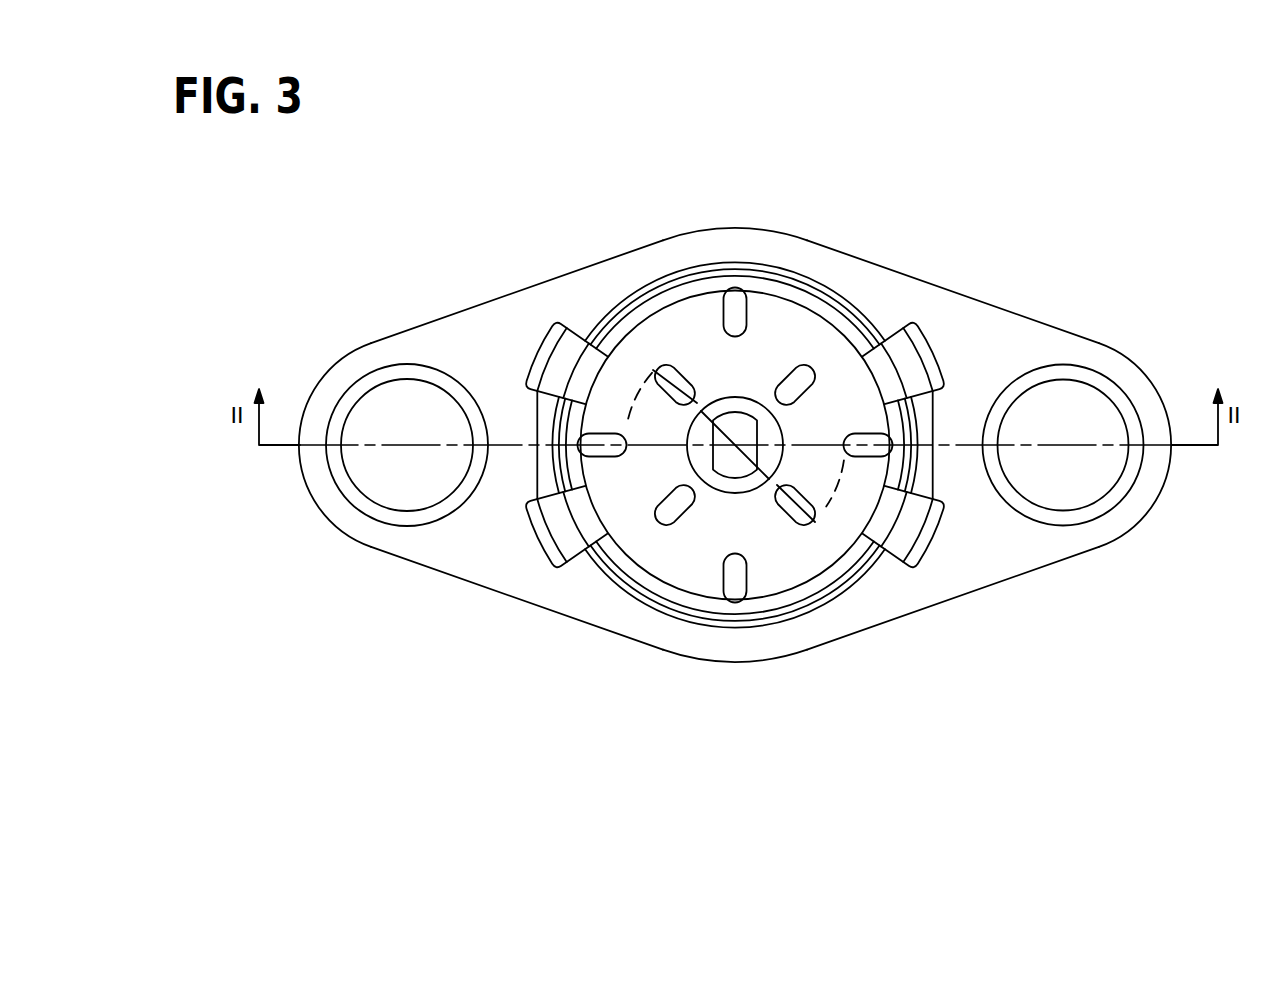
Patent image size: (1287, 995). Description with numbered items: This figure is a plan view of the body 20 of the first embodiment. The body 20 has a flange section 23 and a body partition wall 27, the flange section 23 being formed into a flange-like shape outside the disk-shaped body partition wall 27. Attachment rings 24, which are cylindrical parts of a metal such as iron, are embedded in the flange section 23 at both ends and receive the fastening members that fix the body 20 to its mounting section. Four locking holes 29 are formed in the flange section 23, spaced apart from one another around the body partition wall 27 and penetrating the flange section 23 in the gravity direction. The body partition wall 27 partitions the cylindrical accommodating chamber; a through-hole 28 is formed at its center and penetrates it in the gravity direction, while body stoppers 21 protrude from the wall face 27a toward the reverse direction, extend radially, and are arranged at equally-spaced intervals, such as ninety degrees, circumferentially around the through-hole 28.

The body 20 is at (1003, 287).
The body stoppers 21 is at (788, 515).
The flange section 23 is at (354, 533).
The attachment rings 24 is at (344, 466).
The body partition wall 27 is at (792, 327).
The wall face 27a is at (675, 555).
The through-hole 28 is at (718, 452).
The locking holes 29 is at (547, 508).